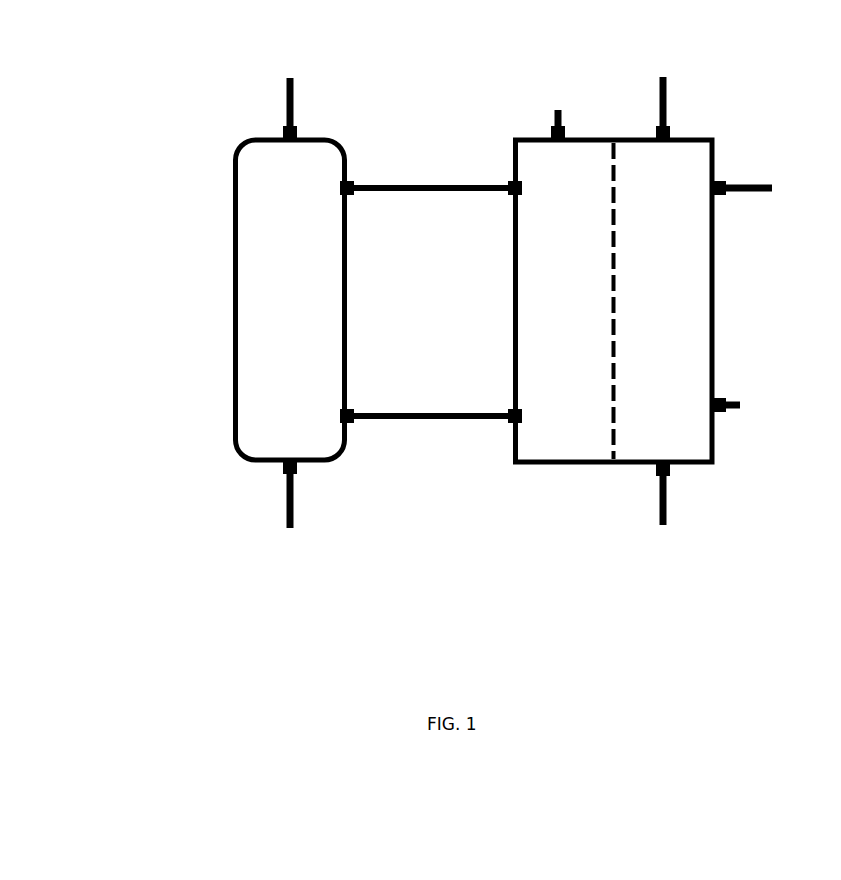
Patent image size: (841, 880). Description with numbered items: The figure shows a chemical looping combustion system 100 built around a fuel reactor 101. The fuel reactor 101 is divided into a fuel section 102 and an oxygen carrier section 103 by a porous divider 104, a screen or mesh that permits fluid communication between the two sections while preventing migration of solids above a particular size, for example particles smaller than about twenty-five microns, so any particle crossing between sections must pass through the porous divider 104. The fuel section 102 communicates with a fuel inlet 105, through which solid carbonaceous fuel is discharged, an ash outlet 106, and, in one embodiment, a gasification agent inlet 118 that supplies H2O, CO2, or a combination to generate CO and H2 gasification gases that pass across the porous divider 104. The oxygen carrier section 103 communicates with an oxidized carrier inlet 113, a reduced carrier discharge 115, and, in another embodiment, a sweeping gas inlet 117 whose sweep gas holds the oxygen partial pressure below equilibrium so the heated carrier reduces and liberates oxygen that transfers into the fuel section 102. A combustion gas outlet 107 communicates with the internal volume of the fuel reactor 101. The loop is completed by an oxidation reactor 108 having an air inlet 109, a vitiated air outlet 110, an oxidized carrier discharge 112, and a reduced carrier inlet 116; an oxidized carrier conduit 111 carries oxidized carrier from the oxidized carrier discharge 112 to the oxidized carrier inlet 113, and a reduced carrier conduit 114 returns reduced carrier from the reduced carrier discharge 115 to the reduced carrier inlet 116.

The system 100 is at (138, 102).
The fuel reactor 101 is at (716, 340).
The fuel section 102 is at (670, 302).
The oxygen carrier section 103 is at (558, 302).
The porous divider 104 is at (615, 272).
The fuel inlet 105 is at (727, 185).
The ash outlet 106 is at (668, 472).
The combustion gas outlet 107 is at (668, 128).
The oxidation reactor 108 is at (280, 252).
The air inlet 109 is at (283, 475).
The vitiated air outlet 110 is at (283, 130).
The oxidized carrier conduit 111 is at (418, 186).
The oxidized carrier discharge 112 is at (352, 183).
The oxidized carrier inlet 113 is at (509, 183).
The reduced carrier conduit 114 is at (418, 423).
The reduced carrier discharge 115 is at (509, 423).
The reduced carrier inlet 116 is at (352, 423).
The sweeping gas inlet 117 is at (566, 125).
The gasification agent inlet 118 is at (722, 412).